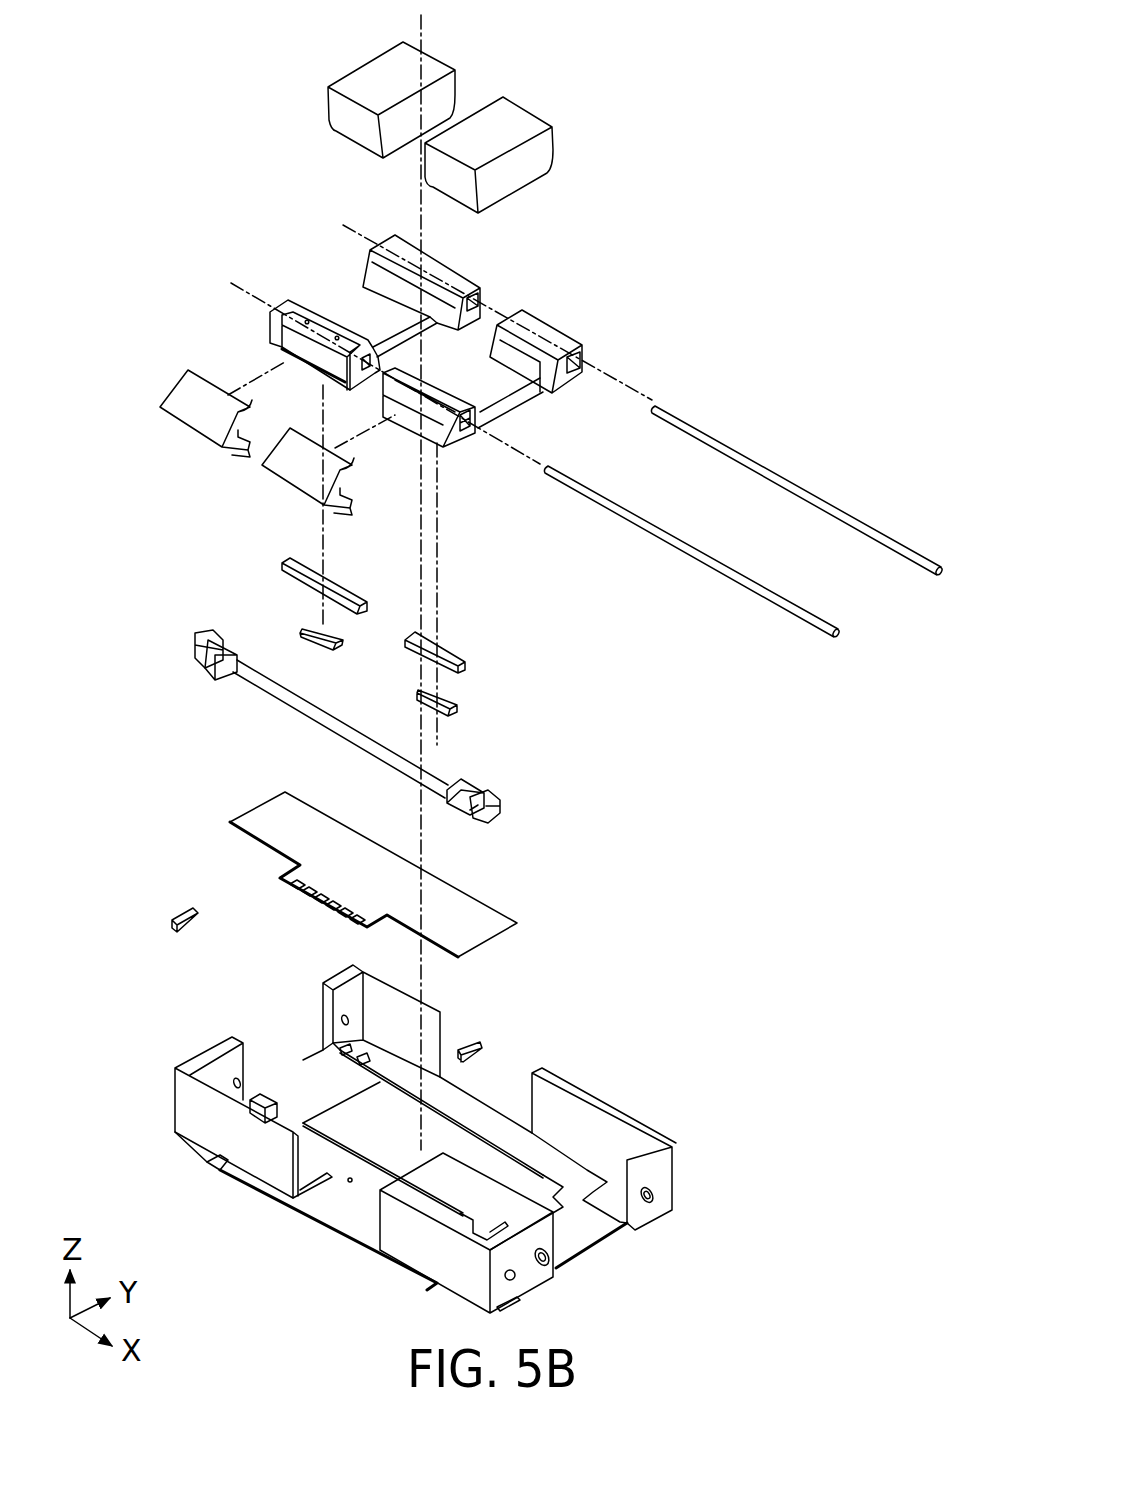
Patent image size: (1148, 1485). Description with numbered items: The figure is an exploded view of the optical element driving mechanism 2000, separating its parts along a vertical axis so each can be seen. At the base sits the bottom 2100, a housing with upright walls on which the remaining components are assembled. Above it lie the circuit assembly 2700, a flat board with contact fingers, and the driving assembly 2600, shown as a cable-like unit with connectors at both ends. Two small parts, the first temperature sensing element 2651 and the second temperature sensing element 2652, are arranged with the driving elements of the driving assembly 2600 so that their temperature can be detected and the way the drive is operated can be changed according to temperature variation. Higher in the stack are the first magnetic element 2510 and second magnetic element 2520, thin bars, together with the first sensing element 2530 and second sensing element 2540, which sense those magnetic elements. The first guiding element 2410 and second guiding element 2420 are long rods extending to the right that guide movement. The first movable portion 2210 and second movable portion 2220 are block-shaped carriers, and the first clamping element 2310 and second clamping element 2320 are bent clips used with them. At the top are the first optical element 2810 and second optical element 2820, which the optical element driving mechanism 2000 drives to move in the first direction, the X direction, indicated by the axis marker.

The optical element driving mechanism 2000 is at (142, 52).
The bottom 2100 is at (307, 1083).
The first movable portion 2210 is at (543, 332).
The second movable portion 2220 is at (287, 298).
The first clamping element 2310 is at (295, 475).
The second clamping element 2320 is at (194, 418).
The first guiding element 2410 is at (783, 478).
The second guiding element 2420 is at (742, 583).
The first magnetic element 2510 is at (453, 657).
The second magnetic element 2520 is at (287, 565).
The first sensing element 2530 is at (455, 700).
The second sensing element 2540 is at (305, 624).
The driving assembly 2600 is at (273, 688).
The circuit assembly 2700 is at (275, 837).
The first temperature sensing element 2651 is at (172, 920).
The second temperature sensing element 2652 is at (480, 1042).
The first optical element 2810 is at (517, 118).
The second optical element 2820 is at (370, 72).